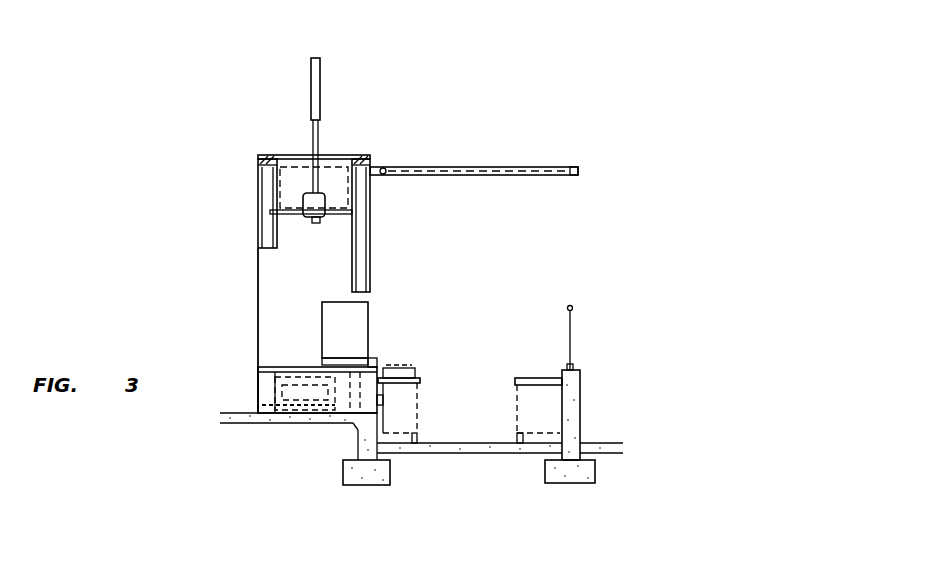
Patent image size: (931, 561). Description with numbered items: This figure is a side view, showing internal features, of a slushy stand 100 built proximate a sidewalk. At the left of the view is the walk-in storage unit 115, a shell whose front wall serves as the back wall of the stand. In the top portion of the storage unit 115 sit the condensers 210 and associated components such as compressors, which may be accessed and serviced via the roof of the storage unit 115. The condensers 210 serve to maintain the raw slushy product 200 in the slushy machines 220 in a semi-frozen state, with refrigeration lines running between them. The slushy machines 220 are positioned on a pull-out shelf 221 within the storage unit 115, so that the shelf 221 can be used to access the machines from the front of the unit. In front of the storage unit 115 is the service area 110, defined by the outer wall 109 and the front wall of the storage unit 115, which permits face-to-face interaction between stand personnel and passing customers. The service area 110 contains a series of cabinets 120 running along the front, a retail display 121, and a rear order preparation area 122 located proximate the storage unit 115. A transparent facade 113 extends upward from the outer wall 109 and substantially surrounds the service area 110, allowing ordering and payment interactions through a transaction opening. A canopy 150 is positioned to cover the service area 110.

The slushy stand 100 is at (615, 222).
The outer wall 109 is at (590, 408).
The service area 110 is at (463, 415).
The transparent facade 113 is at (575, 318).
The storage unit 115 is at (243, 268).
The cabinets 120 is at (410, 412).
The retail display 121 is at (537, 357).
The rear order preparation area 122 is at (398, 338).
The canopy 150 is at (440, 160).
The raw slushy product 200 is at (298, 398).
The condensers 210 is at (293, 177).
The slushy machines 220 is at (330, 318).
The pull-out shelf 221 is at (297, 355).